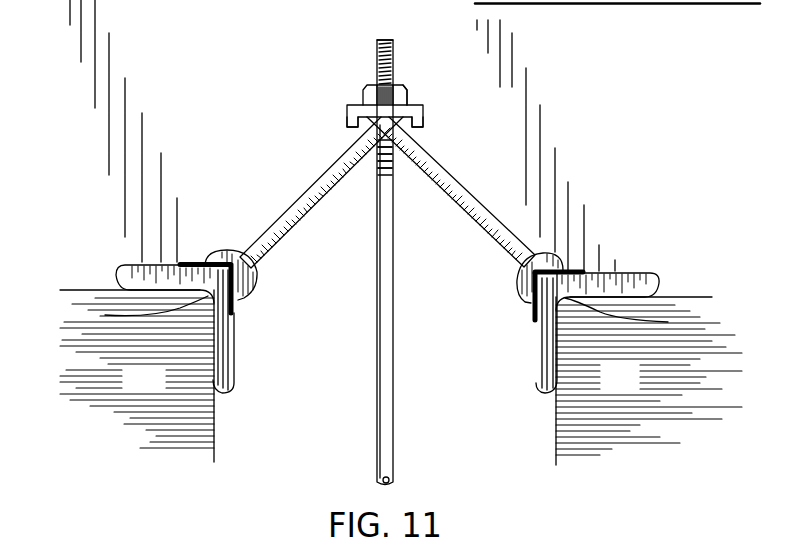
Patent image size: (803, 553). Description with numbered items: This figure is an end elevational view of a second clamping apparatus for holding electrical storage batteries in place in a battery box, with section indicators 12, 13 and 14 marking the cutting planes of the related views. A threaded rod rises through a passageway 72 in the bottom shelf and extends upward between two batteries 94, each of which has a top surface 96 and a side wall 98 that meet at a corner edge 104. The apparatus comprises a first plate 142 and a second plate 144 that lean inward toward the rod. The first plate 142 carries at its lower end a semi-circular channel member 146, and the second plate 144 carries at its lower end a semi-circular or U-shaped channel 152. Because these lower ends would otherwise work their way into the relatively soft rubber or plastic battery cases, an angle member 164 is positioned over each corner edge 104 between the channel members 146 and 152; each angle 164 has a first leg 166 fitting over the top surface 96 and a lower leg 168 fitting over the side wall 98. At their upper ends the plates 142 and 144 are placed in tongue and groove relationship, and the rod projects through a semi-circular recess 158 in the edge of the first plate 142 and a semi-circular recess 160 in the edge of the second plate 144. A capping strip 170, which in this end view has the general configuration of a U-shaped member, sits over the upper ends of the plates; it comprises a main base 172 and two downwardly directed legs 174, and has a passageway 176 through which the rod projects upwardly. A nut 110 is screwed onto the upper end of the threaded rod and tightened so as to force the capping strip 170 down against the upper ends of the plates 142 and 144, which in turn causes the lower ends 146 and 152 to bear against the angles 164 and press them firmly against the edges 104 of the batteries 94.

The passageway 72 is at (377, 364).
The battery 94 is at (160, 390).
The top surface 96 is at (108, 289).
The side wall 98 is at (216, 418).
The edge 104 is at (387, 315).
The nut 110 is at (376, 86).
The first plate 142 is at (474, 234).
The second plate 144 is at (278, 233).
The semi-circular channel member 146 is at (520, 283).
The U-shaped channel 152 is at (241, 296).
The semi-circular recess 158 is at (376, 178).
The semi-circular recess 160 is at (393, 152).
The angle member 164 is at (129, 260).
The first leg 166 is at (180, 262).
The lower leg 168 is at (235, 344).
The capping strip 170 is at (424, 106).
The main base 172 is at (350, 106).
The downwardly directed legs 174 is at (352, 122).
The passageway 176 is at (410, 100).
The section line 12- 12 is at (315, 115).
The section line 13- 13 is at (403, 77).
The section line 14- 14 is at (367, 72).